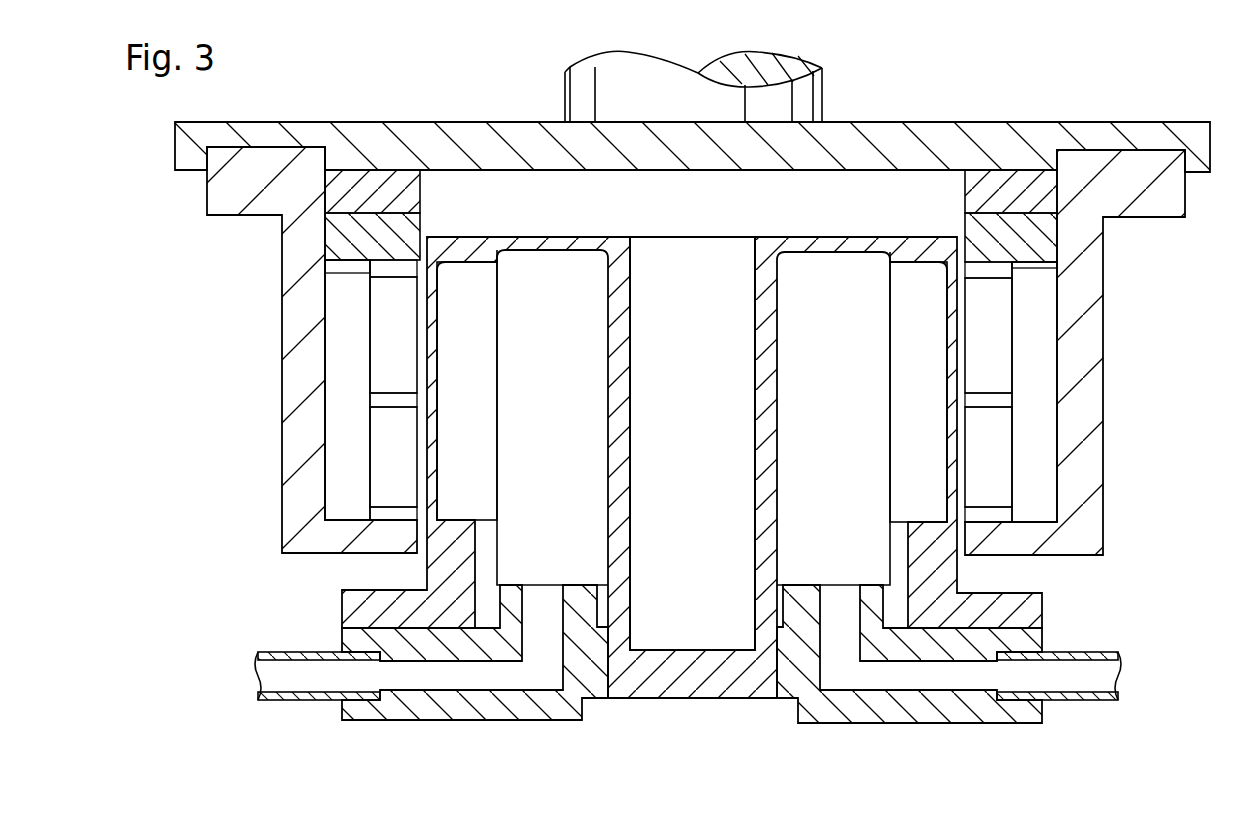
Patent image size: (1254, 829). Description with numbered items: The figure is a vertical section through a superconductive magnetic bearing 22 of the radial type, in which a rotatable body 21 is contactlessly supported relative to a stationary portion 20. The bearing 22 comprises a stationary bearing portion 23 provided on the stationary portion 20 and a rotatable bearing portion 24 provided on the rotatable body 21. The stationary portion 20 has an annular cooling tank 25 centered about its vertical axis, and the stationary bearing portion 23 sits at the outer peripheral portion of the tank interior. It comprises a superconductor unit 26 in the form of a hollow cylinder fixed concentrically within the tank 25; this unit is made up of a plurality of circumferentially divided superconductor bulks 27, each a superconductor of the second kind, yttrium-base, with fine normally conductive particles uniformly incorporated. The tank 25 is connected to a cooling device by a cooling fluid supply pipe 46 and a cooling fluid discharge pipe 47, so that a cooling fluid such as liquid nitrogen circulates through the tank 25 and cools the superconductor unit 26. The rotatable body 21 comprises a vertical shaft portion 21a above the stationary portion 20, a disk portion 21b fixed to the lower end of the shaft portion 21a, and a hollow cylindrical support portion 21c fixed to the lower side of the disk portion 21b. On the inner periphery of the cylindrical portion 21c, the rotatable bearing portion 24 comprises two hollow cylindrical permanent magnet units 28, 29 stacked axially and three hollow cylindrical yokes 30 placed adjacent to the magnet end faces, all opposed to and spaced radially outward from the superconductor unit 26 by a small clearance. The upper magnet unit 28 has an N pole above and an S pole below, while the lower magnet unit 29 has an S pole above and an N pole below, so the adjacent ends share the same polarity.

The stationary portion 20 is at (551, 705).
The rotatable body 21 is at (565, 82).
The vertical shaft portion 21a is at (808, 93).
The disk portion 21b is at (972, 130).
The hollow cylindrical support portion 21c is at (1085, 427).
The superconductive magnetic bearing 22 is at (1046, 560).
The stationary bearing portion 23 is at (499, 343).
The rotatable bearing portion 24 is at (1017, 353).
The annular cooling tank 25 is at (763, 350).
The superconductor unit 26 is at (900, 315).
The superconductor bulk 27 is at (482, 438).
The upper permanent magnet unit 28 is at (373, 330).
The lower permanent magnet unit 29 is at (375, 462).
The yoke 30 is at (368, 270).
The cooling fluid supply pipe 46 is at (1095, 700).
The cooling fluid discharge pipe 47 is at (300, 700).